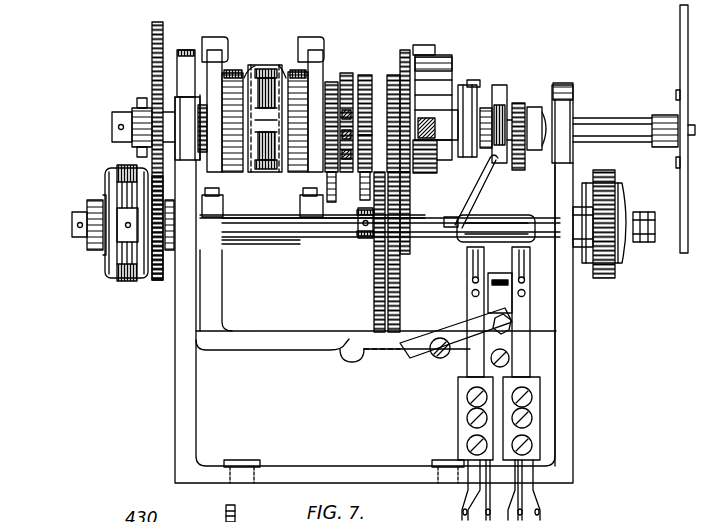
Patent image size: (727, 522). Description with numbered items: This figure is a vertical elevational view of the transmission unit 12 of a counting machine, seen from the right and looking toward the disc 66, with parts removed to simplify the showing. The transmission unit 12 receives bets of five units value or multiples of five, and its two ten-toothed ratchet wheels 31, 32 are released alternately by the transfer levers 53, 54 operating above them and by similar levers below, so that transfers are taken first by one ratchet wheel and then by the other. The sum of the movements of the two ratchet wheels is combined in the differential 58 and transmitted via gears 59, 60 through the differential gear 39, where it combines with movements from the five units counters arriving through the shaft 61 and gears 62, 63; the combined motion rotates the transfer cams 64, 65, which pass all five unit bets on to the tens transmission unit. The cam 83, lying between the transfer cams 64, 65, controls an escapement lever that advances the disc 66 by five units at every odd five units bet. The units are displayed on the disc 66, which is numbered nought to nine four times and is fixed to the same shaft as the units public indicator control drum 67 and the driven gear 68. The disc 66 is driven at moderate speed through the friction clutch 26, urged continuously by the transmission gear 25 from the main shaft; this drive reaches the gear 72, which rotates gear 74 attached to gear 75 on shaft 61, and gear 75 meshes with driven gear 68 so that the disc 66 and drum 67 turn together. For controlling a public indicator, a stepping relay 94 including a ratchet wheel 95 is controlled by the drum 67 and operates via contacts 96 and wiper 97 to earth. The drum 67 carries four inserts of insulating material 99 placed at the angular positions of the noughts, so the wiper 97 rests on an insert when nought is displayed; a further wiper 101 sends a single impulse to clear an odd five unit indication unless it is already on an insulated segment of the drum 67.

The transmission unit 12 is at (565, 410).
The transmission gear 25 is at (602, 172).
The friction clutch 26 is at (628, 207).
The ratchet wheel 31 is at (223, 62).
The ratchet wheel 32 is at (323, 64).
The differential gear 39 is at (131, 287).
The transfer lever 53 is at (205, 48).
The transfer lever 54 is at (311, 48).
The differential 58 is at (267, 60).
The gear 59 is at (152, 50).
The gear 60 is at (162, 280).
The shaft 61 is at (655, 232).
The gear 62 is at (374, 312).
The gear 63 is at (364, 80).
The transfer cam 64 is at (332, 172).
The transfer cam 65 is at (363, 183).
The disc 66 is at (688, 230).
The units public indicator control drum 67 is at (450, 67).
The driven gear 68 is at (393, 72).
The gear 72 is at (405, 52).
The gear 74 is at (405, 263).
The gear 75 is at (395, 310).
The cam 83 is at (350, 80).
The stepping relay 94 is at (505, 368).
The ratchet wheel 95 is at (497, 96).
The contacts 96 is at (556, 300).
The wiper 97 is at (443, 183).
The insert of insulating material 99 is at (431, 118).
The wiper 101 is at (428, 53).